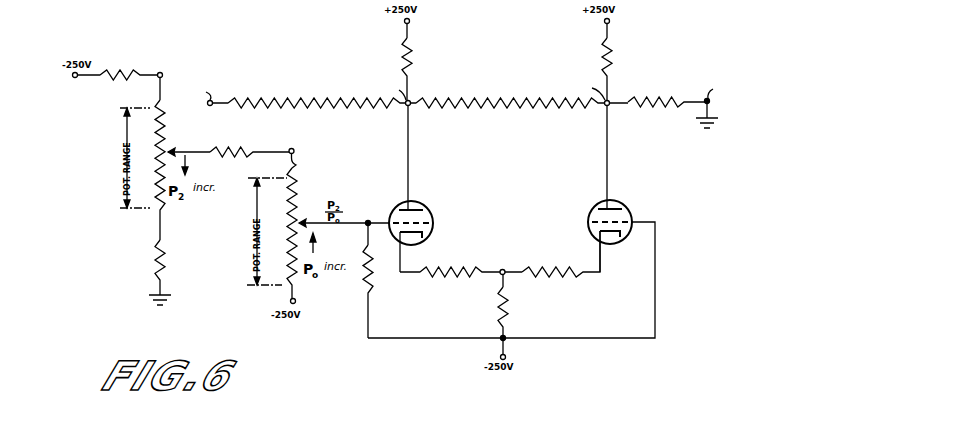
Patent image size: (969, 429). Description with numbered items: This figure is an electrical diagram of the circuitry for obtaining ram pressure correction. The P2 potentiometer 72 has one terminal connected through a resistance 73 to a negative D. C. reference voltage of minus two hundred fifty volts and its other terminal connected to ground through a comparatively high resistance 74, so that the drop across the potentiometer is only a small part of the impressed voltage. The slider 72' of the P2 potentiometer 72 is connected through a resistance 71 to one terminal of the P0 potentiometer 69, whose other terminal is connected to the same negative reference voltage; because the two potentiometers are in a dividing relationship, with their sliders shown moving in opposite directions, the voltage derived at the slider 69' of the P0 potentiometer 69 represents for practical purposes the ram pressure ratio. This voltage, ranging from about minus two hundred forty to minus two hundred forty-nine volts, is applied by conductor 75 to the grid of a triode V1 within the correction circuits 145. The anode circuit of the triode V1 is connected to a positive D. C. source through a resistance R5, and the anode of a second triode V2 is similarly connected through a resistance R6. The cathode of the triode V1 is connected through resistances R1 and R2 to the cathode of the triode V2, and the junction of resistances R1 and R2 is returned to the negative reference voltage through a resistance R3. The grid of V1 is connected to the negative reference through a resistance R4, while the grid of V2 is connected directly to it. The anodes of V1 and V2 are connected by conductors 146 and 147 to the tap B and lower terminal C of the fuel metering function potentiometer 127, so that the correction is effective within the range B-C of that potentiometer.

The resistance 73 is at (118, 67).
The P2 potentiometer 72 is at (177, 159).
The slider of the P2 potentiometer 72' is at (189, 143).
The resistance 71 is at (236, 147).
The resistance 74 is at (165, 253).
The fuel metering function potentiometer 127 is at (335, 96).
The P0 potentiometer 69 is at (307, 229).
The slider of the P0 potentiometer 69' is at (314, 207).
The conductor 75 is at (364, 227).
The conductor 146 is at (410, 159).
The conductor 147 is at (611, 156).
The ram pressure correction circuits 145 is at (527, 220).
The resistance R1 is at (455, 262).
The resistance R2 is at (546, 262).
The resistance R3 is at (508, 310).
The resistance R4 is at (372, 298).
The resistance R5 is at (403, 51).
The resistance R6 is at (603, 51).
The triode V1 is at (392, 212).
The triode V2 is at (598, 207).